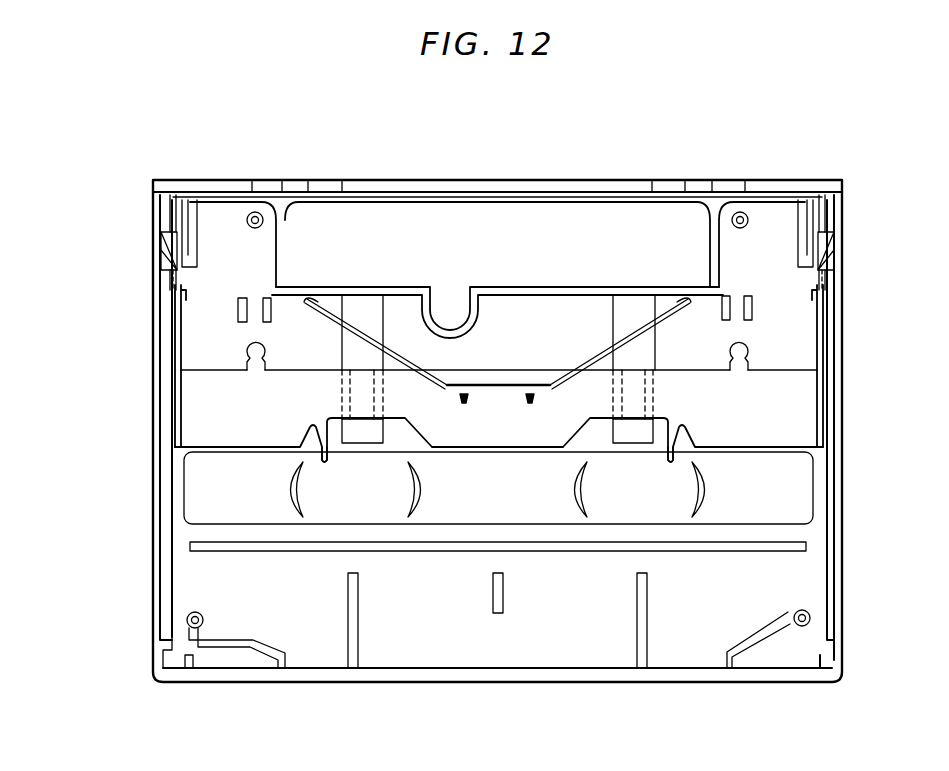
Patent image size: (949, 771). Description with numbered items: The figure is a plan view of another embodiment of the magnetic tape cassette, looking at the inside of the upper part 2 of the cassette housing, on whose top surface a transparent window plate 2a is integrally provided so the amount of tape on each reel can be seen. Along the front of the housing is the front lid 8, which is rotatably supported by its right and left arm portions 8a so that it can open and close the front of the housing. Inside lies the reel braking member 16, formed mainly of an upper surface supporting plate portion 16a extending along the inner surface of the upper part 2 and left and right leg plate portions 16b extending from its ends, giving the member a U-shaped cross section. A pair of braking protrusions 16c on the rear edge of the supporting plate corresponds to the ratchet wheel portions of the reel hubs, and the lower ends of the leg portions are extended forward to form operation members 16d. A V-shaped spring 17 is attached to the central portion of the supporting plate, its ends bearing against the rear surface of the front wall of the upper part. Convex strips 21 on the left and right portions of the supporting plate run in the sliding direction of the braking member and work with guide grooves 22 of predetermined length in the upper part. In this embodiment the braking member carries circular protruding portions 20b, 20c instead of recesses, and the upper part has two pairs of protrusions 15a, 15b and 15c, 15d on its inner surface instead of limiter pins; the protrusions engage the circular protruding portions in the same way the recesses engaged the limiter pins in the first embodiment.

The upper part 2 is at (520, 683).
The transparent window plate 2a is at (800, 500).
The front lid 8 is at (510, 180).
The arm portions 8a is at (163, 203).
The protrusion 15a is at (240, 300).
The protrusion 15b is at (272, 305).
The protrusion 15c is at (716, 308).
The protrusion 15d is at (757, 300).
The reel braking member 16 is at (538, 447).
The upper surface supporting plate portion 16a is at (488, 432).
The leg plate portions 16b is at (177, 385).
The braking protrusions 16c is at (327, 462).
The operation members 16d is at (165, 243).
The spring 17 is at (583, 360).
The circular protruding portion 20b is at (249, 362).
The circular protruding portion 20c is at (744, 362).
The convex strips 21 is at (383, 397).
The guide grooves 22 is at (343, 337).